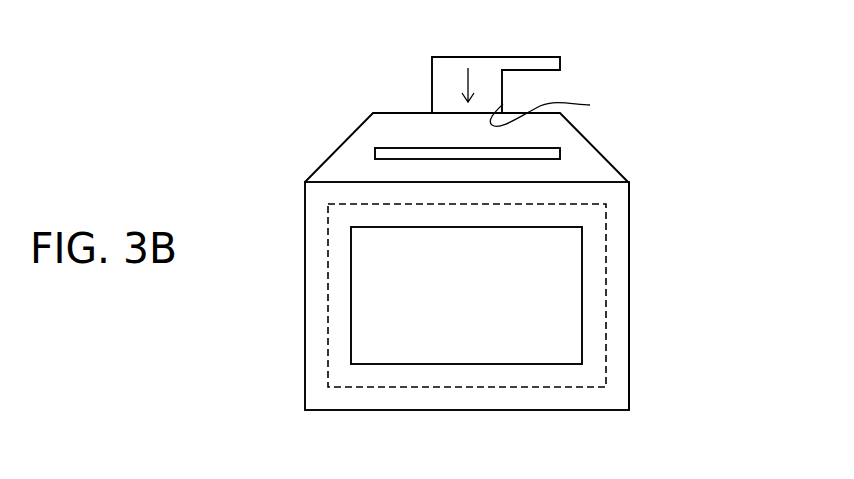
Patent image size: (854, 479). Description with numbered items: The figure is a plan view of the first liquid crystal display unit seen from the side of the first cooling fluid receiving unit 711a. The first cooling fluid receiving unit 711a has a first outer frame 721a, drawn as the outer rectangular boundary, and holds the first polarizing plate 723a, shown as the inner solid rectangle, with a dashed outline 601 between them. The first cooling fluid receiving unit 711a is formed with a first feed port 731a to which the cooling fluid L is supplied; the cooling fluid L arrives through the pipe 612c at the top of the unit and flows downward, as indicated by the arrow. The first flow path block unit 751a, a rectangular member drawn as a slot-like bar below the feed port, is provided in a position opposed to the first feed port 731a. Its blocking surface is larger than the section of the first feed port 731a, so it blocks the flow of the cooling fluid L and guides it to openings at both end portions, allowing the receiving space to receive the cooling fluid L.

The third pipe 612c is at (480, 56).
The cooling fluid L is at (582, 67).
The first cooling fluid receiving unit 711a is at (336, 123).
The first feed port 731a is at (570, 111).
The first flow path block unit 751a is at (560, 153).
The first outer frame 721a is at (630, 244).
The display panel 601 is at (605, 292).
The first polarizing plate 723a is at (582, 335).